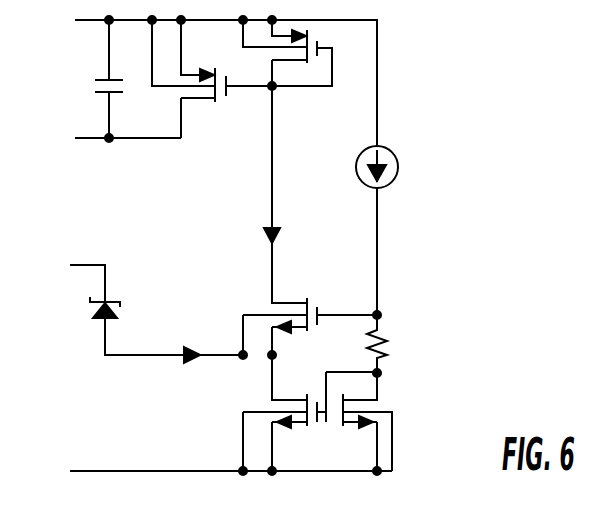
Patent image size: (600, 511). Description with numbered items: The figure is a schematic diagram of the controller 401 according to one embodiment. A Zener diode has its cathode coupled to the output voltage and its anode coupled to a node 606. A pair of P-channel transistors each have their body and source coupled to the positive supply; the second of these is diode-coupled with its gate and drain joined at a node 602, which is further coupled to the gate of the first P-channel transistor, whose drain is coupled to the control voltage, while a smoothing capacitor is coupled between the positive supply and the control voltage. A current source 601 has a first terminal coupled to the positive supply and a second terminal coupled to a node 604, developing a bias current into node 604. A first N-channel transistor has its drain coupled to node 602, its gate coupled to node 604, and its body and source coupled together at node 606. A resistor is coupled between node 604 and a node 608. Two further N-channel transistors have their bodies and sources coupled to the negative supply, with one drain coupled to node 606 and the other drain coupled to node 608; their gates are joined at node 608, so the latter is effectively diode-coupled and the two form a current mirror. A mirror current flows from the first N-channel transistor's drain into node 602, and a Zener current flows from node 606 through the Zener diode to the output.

The controller 401 is at (48, 211).
The current source 601 is at (390, 148).
The node 602 is at (271, 89).
The node 604 is at (382, 312).
The node 606 is at (238, 358).
The node 608 is at (382, 376).